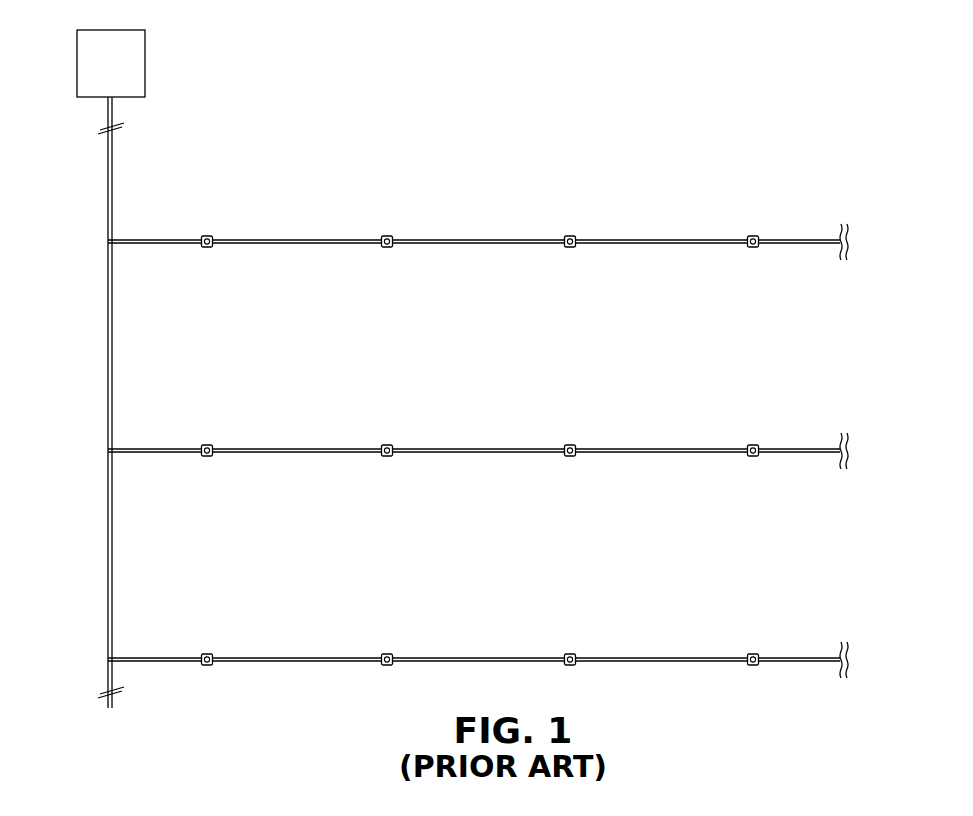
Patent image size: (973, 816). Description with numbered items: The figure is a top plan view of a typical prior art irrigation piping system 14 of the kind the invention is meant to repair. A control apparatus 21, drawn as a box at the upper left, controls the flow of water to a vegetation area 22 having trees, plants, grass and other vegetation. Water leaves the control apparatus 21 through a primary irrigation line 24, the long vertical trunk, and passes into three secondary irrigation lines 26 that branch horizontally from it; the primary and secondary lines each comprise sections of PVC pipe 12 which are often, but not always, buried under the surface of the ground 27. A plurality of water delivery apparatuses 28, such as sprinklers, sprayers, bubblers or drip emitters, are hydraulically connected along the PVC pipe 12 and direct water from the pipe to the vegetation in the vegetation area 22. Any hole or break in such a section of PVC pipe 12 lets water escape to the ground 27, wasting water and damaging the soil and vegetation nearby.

The PVC pipe 12 is at (643, 239).
The irrigation piping system 14 is at (813, 135).
The control apparatus 21 is at (145, 62).
The vegetation area 22 is at (806, 358).
The primary irrigation line 24 is at (109, 730).
The secondary irrigation line 26 is at (571, 654).
The ground 27 is at (309, 352).
The water delivery apparatus 28 is at (209, 236).